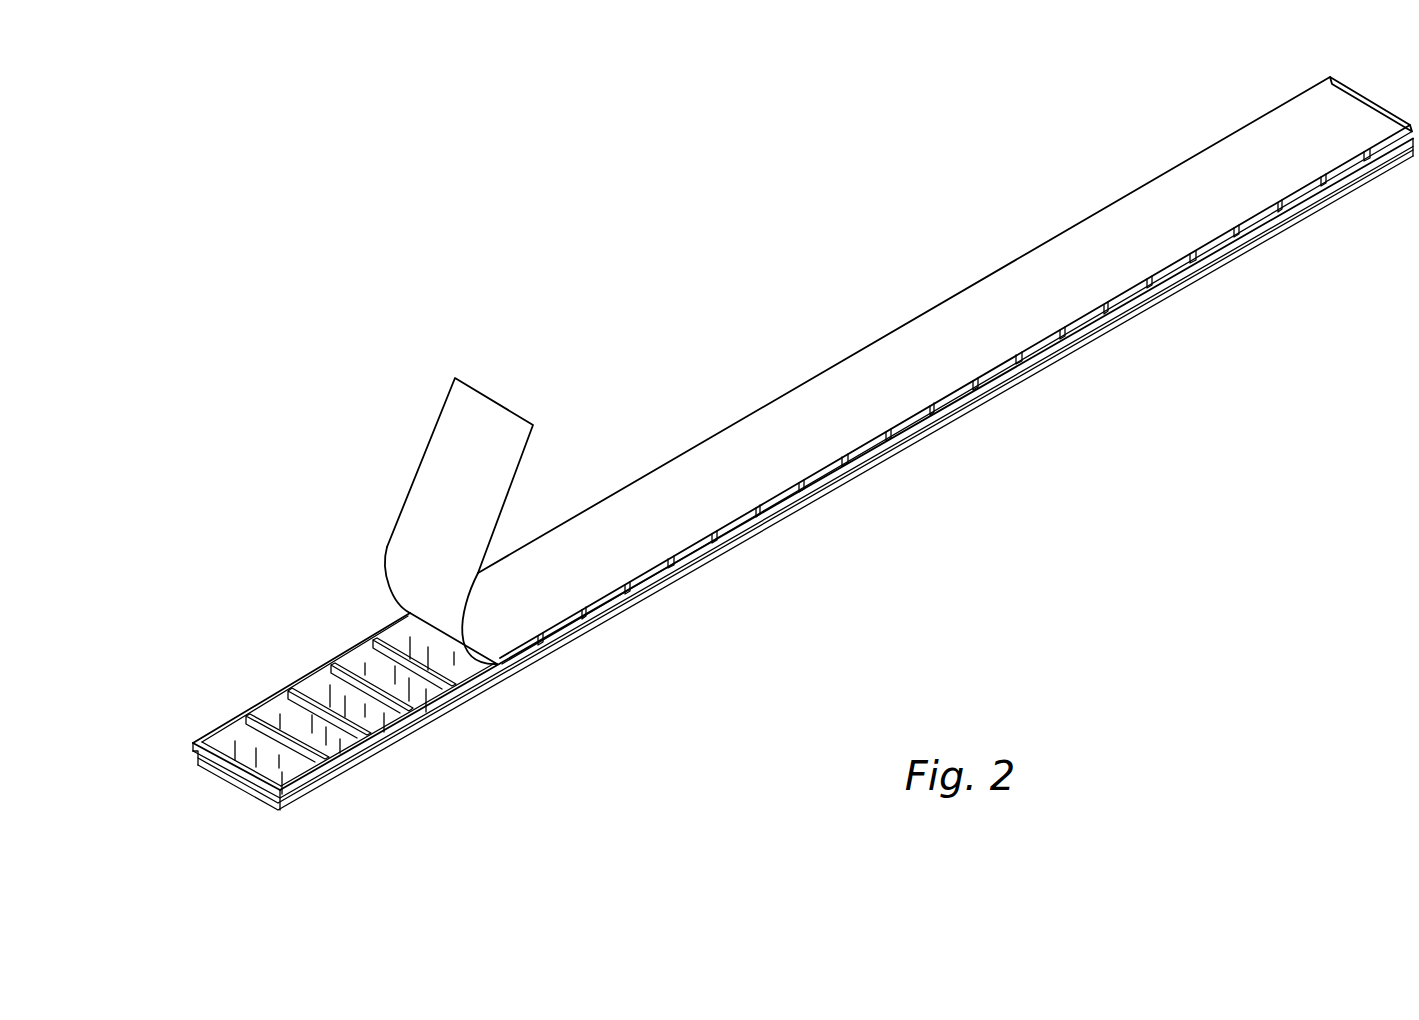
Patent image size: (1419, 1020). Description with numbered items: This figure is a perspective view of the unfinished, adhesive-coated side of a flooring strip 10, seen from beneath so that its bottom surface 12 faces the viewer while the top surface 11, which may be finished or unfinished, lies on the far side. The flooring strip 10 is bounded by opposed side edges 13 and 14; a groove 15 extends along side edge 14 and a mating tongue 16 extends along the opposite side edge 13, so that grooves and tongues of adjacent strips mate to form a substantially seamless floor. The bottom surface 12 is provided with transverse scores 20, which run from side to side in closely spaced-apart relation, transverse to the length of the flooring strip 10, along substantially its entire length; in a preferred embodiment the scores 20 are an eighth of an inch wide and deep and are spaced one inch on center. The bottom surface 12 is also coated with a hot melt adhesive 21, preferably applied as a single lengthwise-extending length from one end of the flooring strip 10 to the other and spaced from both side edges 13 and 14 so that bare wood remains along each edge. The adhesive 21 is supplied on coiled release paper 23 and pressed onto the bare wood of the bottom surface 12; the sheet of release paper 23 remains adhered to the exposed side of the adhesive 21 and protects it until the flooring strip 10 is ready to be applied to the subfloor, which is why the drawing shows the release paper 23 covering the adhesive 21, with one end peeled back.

The flooring strip 10 is at (726, 318).
The top surface 11 is at (268, 808).
The bottom surface 12 is at (262, 712).
The side edge 13 is at (350, 648).
The side edge 14 is at (722, 557).
The groove 15 is at (302, 783).
The tongue 16 is at (190, 742).
The transverse scores 20 is at (540, 638).
The hot melt adhesive 21 is at (408, 640).
The release paper 23 is at (929, 335).